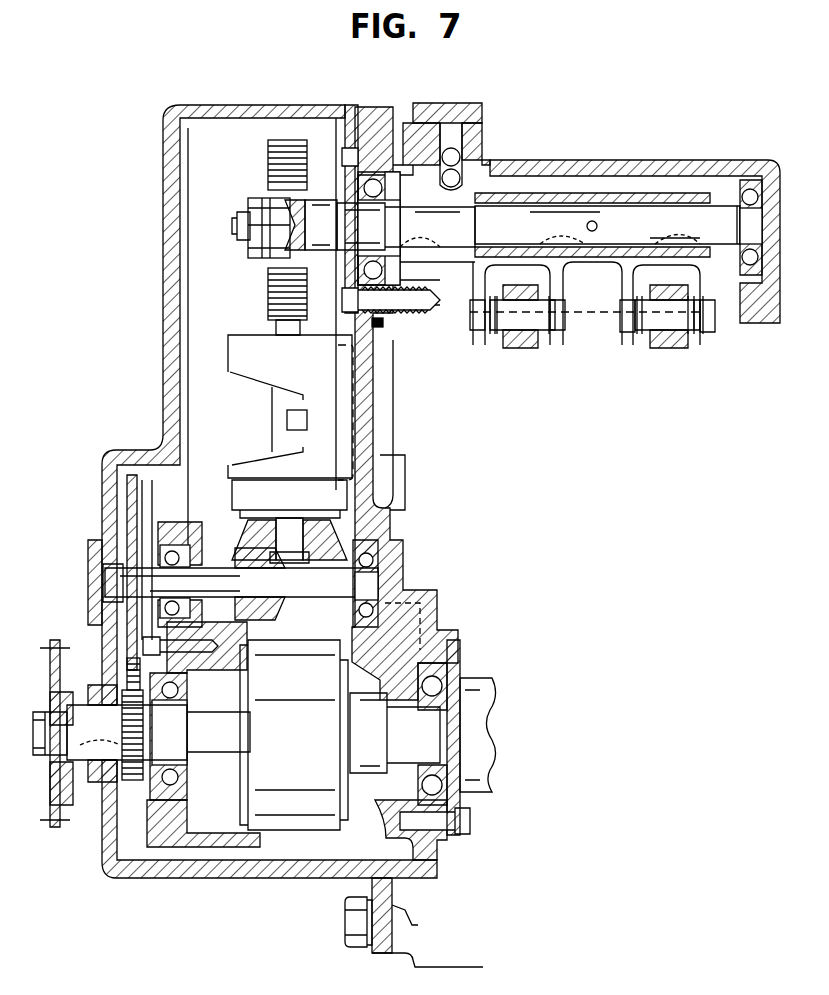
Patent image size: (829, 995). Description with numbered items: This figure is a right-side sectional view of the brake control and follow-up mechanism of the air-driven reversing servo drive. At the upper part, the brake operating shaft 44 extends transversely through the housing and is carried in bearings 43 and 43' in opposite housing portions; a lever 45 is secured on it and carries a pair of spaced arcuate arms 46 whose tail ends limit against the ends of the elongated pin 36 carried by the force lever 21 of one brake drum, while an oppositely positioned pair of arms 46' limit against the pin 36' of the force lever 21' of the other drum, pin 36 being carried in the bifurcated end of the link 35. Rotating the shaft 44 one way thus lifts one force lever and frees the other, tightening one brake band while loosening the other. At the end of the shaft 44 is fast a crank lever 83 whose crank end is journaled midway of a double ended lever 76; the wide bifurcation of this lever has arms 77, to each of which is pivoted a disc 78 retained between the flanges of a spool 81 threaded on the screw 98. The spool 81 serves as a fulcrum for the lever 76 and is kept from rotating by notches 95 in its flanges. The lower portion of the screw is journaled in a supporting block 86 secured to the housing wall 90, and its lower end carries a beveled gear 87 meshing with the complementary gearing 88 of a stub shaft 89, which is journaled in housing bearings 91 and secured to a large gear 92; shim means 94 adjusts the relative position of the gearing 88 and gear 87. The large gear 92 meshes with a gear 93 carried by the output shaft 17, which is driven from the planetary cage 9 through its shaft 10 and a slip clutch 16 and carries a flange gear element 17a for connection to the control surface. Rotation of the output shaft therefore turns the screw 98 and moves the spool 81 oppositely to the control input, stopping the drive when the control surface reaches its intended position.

The cage 9 is at (468, 690).
The shaft 10 is at (442, 741).
The slip clutch 16 is at (307, 741).
The output shaft 17 is at (104, 743).
The flange gear element 17a is at (48, 665).
The force lever 21 is at (667, 337).
The force lever 21' is at (521, 337).
The link 35 is at (690, 345).
The pin 36 is at (700, 323).
The pin 36' is at (539, 305).
The bearing 43 is at (742, 197).
The bearing 43' is at (387, 183).
The brake operating shaft 44 is at (458, 233).
The lever 45 is at (585, 193).
The arcuate arms 46 is at (678, 338).
The arcuate arms 46' is at (464, 337).
The double ended lever 76 is at (295, 200).
The arms 77 is at (247, 243).
The disc 78 is at (240, 216).
The spool 81 is at (249, 186).
The crank lever 83 is at (318, 252).
The supporting block 86 is at (260, 376).
The beveled gear 87 is at (322, 528).
The complementary gearing 88 is at (240, 550).
The stub shaft 89 is at (240, 584).
The wall 90 is at (372, 418).
The housing bearings 91 is at (145, 525).
The large gear 92 is at (127, 490).
The gear 93 is at (132, 782).
The shim means 94 is at (170, 522).
The notches 95 is at (272, 268).
The screw 98 is at (290, 140).